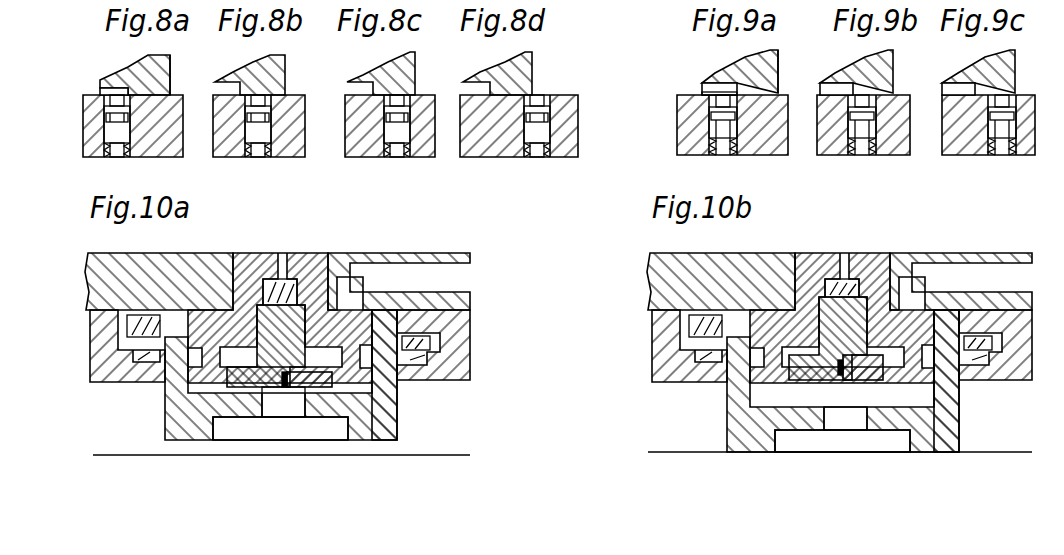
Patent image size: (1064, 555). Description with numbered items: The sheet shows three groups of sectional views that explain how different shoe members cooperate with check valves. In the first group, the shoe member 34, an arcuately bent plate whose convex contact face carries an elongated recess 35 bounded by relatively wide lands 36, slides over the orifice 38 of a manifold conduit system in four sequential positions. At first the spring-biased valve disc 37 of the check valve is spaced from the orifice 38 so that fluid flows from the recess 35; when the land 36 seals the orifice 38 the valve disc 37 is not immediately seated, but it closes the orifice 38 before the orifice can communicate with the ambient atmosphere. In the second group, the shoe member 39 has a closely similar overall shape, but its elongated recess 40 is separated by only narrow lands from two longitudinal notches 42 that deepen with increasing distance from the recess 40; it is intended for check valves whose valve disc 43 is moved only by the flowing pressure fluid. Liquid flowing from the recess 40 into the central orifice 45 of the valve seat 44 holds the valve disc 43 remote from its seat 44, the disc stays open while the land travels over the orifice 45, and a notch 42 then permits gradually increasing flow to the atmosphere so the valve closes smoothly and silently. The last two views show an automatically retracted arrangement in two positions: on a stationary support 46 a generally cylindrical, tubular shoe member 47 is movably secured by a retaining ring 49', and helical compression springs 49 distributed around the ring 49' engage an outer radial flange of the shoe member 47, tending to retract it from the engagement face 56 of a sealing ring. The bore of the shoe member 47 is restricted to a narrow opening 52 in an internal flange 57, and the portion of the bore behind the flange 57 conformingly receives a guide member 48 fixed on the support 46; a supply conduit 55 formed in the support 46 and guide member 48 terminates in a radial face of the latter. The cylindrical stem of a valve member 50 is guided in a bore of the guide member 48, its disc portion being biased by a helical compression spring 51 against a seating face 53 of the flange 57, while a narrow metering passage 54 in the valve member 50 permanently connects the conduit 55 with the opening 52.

In FIG. 8A, the shoe member 34 is at (123, 75).
In FIG. 8A, the elongated recess 35 is at (103, 90).
In FIG. 8A, the land 36 is at (163, 92).
In FIG. 8A, the valve disc 37 is at (110, 118).
In FIG. 8A, the orifice 38 is at (117, 100).
In FIG. 9A, the shoe member 39 is at (725, 72).
In FIG. 9A, the elongated recess 40 is at (705, 88).
In FIG. 9A, the longitudinal notch 42 is at (780, 92).
In FIG. 9A, the valve disc 43 is at (720, 118).
In FIG. 9A, the valve seat 44 is at (715, 108).
In FIG. 9A, the central orifice 45 is at (710, 95).
In FIG. 10A, the stationary support 46 is at (128, 285).
In FIG. 10B, the stationary support 46 is at (692, 281).
In FIG. 10A, the shoe member 47 is at (180, 420).
In FIG. 10B, the shoe member 47 is at (809, 381).
In FIG. 10A, the guide member 48 is at (305, 262).
In FIG. 10B, the guide member 48 is at (842, 299).
In FIG. 10A, the helical compression spring 49 is at (127, 367).
In FIG. 10B, the helical compression spring 49 is at (691, 366).
In FIG. 10A, the retaining ring 49' is at (96, 346).
In FIG. 10B, the retaining ring 49' is at (657, 346).
In FIG. 10A, the valve member 50 is at (395, 440).
In FIG. 10B, the valve member 50 is at (964, 408).
In FIG. 10A, the helical compression spring 51 is at (270, 280).
In FIG. 10B, the helical compression spring 51 is at (821, 256).
In FIG. 10A, the narrow opening 52 is at (295, 407).
In FIG. 10B, the narrow opening 52 is at (831, 401).
In FIG. 10A, the seating face 53 is at (355, 430).
In FIG. 10B, the seating face 53 is at (864, 468).
In FIG. 10A, the metering passage 54 is at (282, 387).
In FIG. 10B, the metering passage 54 is at (821, 433).
In FIG. 10A, the supply conduit 55 is at (402, 280).
In FIG. 10B, the supply conduit 55 is at (961, 298).
In FIG. 10A, the engagement face 56 is at (100, 455).
In FIG. 10B, the engagement face 56 is at (813, 433).
In FIG. 10A, the internal flange 57 is at (312, 407).
In FIG. 10B, the internal flange 57 is at (879, 430).